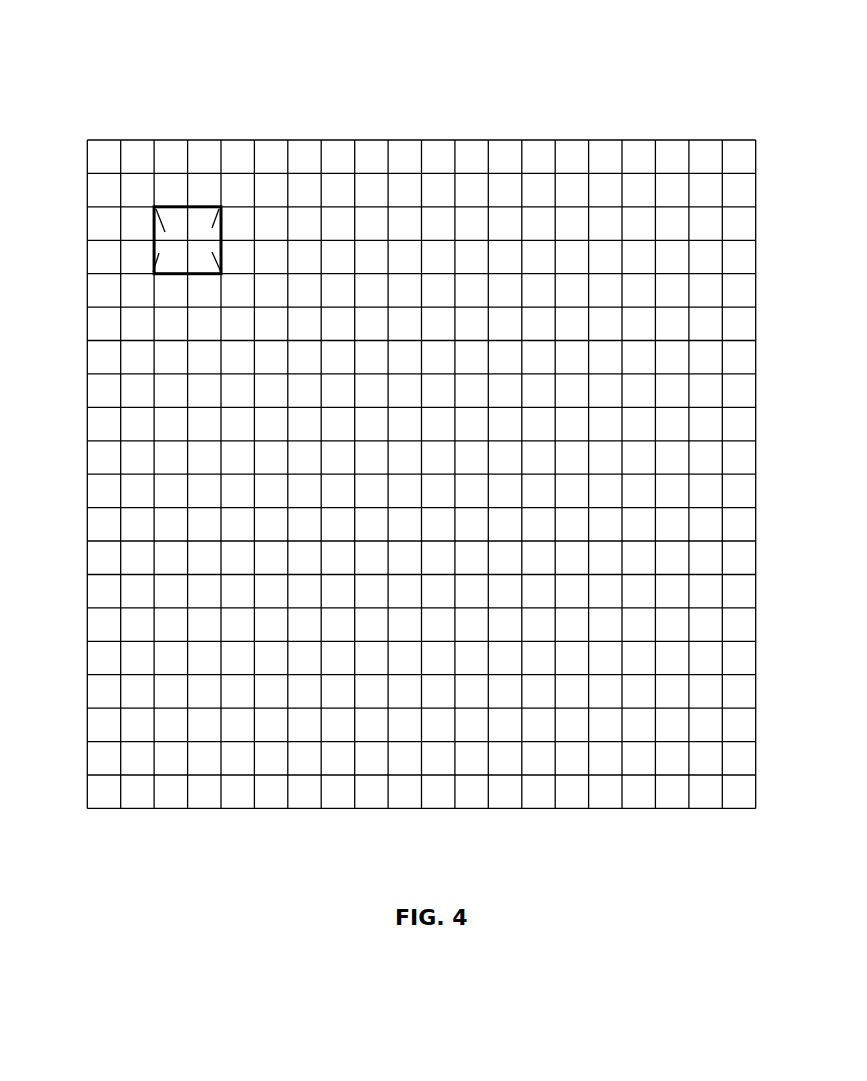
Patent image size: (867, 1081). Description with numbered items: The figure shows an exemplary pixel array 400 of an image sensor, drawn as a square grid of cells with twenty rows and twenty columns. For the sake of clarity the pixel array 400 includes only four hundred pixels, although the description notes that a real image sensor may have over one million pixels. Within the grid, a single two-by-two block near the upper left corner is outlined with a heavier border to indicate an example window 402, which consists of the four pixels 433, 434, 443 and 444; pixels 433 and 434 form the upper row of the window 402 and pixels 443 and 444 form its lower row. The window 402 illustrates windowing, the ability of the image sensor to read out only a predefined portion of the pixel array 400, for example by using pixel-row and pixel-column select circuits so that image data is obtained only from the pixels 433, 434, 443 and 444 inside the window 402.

The pixel array 400 is at (66, 62).
The window 402 is at (166, 186).
The pixel 433 is at (153, 212).
The pixel 434 is at (222, 212).
The pixel 443 is at (152, 272).
The pixel 444 is at (222, 272).